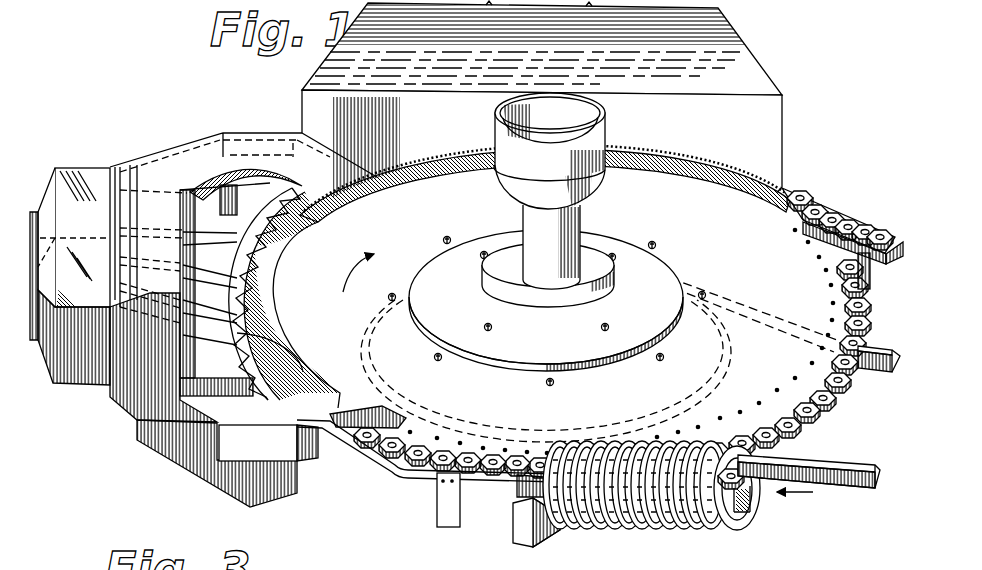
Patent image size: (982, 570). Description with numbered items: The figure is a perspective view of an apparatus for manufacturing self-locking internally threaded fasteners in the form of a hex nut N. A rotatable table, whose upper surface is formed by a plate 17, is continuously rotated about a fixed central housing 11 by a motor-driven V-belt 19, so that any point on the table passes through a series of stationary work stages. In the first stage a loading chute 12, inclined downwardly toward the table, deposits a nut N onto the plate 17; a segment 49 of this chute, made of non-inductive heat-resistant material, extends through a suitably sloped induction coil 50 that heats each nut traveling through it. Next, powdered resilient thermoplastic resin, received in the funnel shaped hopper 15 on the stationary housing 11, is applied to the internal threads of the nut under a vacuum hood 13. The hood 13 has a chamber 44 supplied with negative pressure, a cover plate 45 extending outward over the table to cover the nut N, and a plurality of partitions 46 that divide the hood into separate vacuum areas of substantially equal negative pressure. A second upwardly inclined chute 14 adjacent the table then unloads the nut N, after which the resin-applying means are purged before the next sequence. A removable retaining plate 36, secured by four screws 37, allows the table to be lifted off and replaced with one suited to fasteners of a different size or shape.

The housing 11 is at (594, 258).
The loading chute 12 is at (412, 485).
The vacuum hood 13 is at (290, 97).
The second upwardly inclined chute 14 is at (847, 208).
The funnel shaped hopper 15 is at (566, 90).
The plate 17 is at (776, 287).
The V-belt 19 is at (885, 374).
The retaining plate 36 is at (653, 260).
The screws 37 is at (600, 328).
The chamber 44 is at (100, 177).
The cover plate 45 is at (336, 53).
The partitions 46 is at (215, 232).
The chute segment 49 is at (757, 497).
The induction coil 50 is at (730, 530).
The hex nut N is at (800, 193).